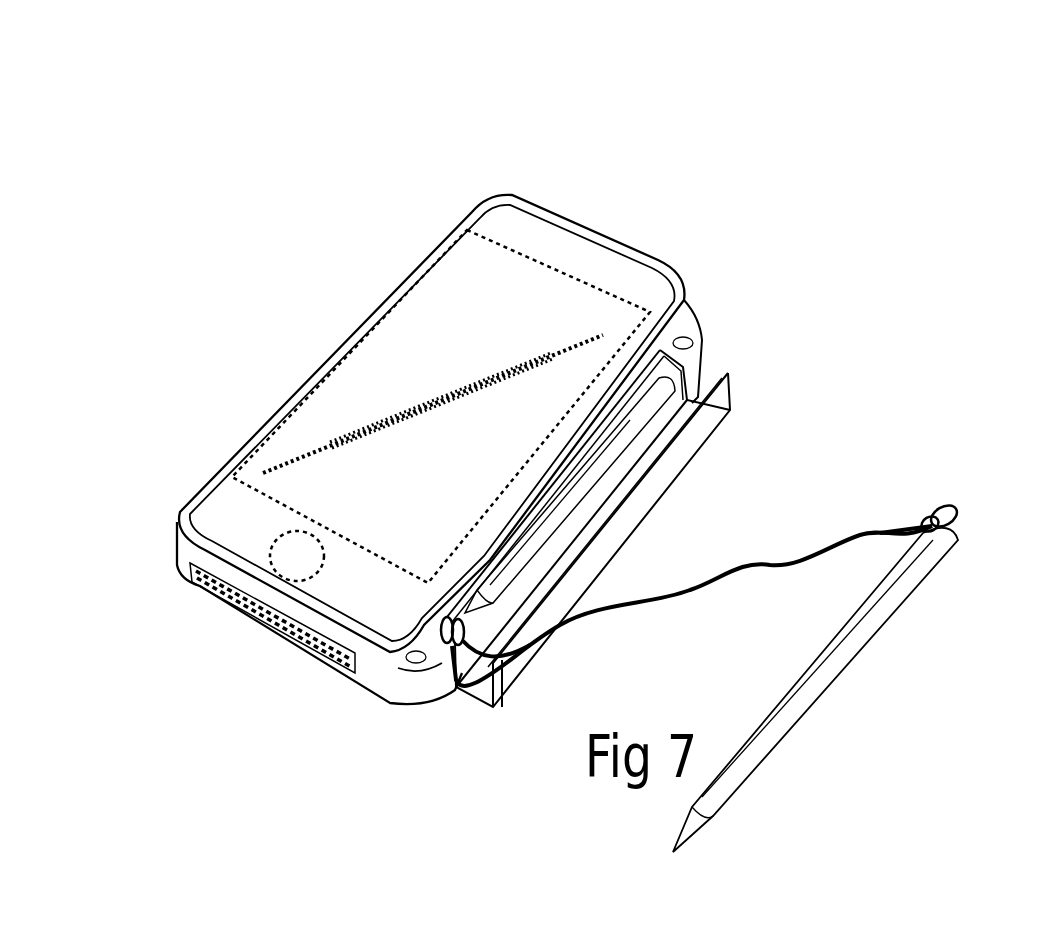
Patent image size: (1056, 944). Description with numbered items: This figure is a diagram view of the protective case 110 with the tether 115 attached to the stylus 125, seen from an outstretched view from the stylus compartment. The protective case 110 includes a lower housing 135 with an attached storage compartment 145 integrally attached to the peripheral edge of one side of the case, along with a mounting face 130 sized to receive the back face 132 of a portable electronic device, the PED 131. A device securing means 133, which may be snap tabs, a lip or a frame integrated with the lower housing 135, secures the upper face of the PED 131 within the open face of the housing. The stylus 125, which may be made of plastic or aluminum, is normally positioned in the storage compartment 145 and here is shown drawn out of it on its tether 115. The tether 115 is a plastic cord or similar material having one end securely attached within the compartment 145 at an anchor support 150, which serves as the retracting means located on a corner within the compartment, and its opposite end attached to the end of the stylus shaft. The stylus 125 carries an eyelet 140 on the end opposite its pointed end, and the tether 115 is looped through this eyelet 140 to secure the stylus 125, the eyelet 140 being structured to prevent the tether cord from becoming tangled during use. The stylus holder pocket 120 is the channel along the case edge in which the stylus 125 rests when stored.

The protective case 110 is at (325, 243).
The tether 115 is at (895, 540).
The stylus holder pocket 120 is at (697, 410).
The stylus 125 is at (587, 480).
The mounting face 130 is at (553, 317).
The PED 131 is at (663, 263).
The back face 132 is at (667, 337).
The device securing means 133 is at (695, 343).
The lower housing 135 is at (390, 700).
The eyelet 140 is at (950, 510).
The storage compartment 145 is at (553, 547).
The anchor support 150 is at (513, 668).